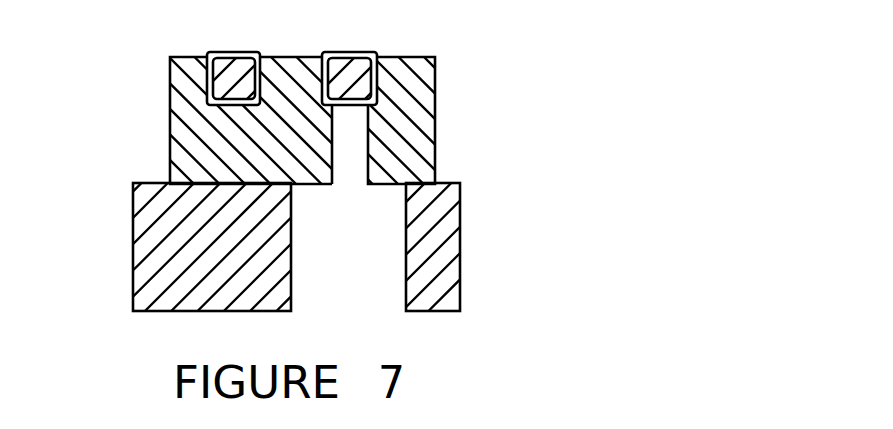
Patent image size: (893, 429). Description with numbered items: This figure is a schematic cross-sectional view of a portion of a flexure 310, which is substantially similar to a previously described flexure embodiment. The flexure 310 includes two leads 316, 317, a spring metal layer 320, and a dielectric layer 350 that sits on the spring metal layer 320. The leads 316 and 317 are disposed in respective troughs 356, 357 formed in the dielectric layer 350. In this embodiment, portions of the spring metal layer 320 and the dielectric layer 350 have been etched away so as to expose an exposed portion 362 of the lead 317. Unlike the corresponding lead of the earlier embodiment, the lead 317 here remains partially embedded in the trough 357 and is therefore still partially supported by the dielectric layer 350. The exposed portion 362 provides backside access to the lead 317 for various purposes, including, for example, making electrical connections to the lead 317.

The flexure 310 is at (114, 82).
The lead 316 is at (241, 64).
The lead 317 is at (356, 65).
The spring metal layer 320 is at (466, 267).
The dielectric layer 350 is at (439, 146).
The trough 356 is at (196, 79).
The trough 357 is at (377, 80).
The exposed portion 362 is at (352, 105).